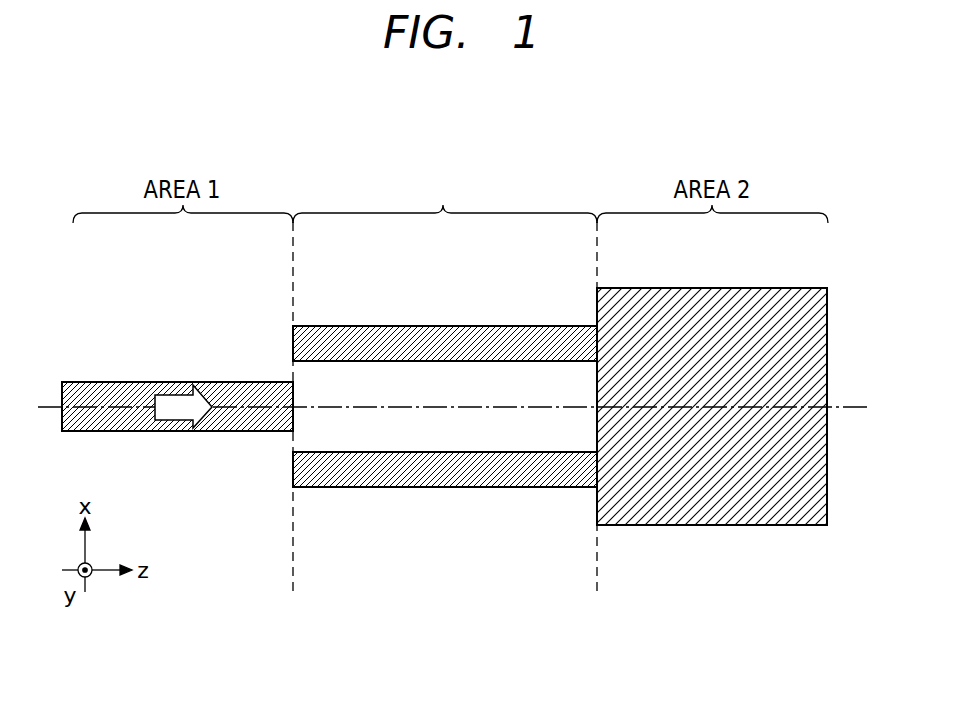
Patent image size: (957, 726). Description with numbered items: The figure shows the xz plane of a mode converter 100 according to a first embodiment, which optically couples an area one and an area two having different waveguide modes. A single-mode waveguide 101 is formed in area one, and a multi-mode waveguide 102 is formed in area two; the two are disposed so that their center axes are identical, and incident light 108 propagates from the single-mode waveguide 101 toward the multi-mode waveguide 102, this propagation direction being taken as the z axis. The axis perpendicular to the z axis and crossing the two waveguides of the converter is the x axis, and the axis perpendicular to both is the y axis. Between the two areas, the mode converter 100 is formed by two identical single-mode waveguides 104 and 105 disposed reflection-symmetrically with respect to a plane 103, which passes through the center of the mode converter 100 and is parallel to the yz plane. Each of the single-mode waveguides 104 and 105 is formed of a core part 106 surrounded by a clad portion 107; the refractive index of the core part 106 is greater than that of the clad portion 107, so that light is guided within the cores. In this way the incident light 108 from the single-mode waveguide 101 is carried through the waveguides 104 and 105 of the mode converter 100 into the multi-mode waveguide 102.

The mode converter 100 is at (446, 186).
The single-mode waveguide 101 is at (118, 381).
The multi-mode waveguide 102 is at (733, 288).
The plane 103 is at (843, 409).
The single-mode waveguide 104 is at (418, 326).
The single-mode waveguide 105 is at (418, 488).
The core part 106 is at (392, 457).
The clad portion 107 is at (328, 542).
The incident light 108 is at (178, 414).